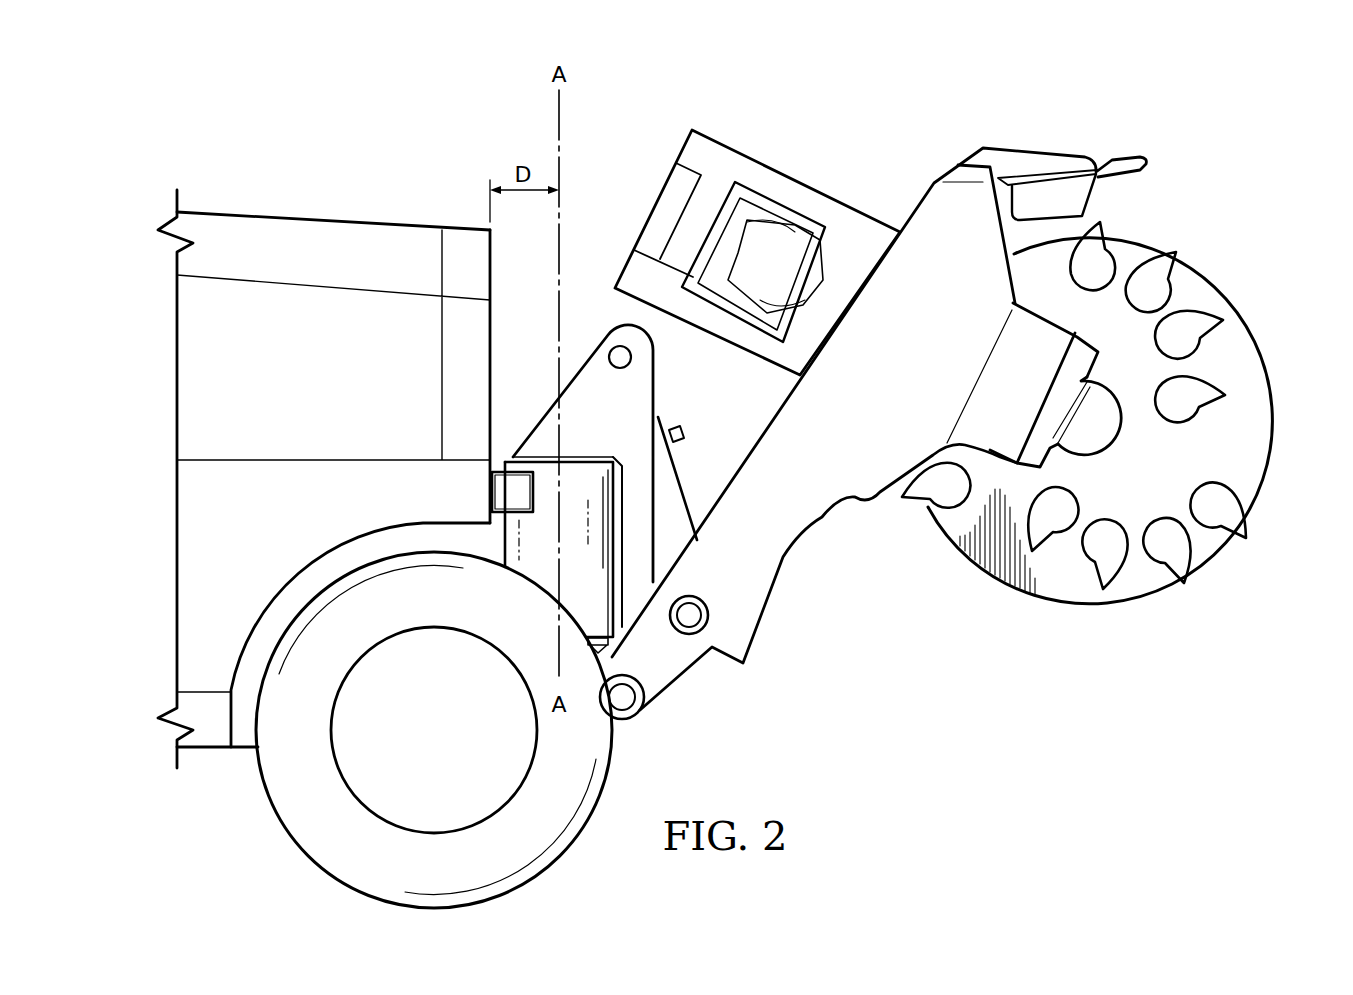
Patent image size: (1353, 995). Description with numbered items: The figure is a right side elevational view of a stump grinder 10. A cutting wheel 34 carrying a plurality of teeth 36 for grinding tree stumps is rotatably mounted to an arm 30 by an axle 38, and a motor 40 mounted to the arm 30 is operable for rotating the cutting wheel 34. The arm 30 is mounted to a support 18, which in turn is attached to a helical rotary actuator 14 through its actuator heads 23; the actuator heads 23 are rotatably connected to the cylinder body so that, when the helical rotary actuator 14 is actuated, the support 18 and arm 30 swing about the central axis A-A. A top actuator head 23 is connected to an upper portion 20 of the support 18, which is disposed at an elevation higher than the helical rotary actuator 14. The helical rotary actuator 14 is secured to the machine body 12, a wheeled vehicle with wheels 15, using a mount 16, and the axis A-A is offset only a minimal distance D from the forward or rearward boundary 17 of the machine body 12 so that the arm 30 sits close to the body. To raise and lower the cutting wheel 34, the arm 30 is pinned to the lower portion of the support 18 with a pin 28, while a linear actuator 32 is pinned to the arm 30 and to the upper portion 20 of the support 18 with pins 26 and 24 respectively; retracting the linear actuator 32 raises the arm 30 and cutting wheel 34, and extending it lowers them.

The stump grinder 10 is at (945, 71).
The machine body 12 is at (327, 220).
The helical rotary actuator 14 is at (587, 472).
The wheels 15 is at (272, 800).
The mount 16 is at (497, 498).
The forward or rearward boundary 17 is at (492, 265).
The support 18 is at (540, 385).
The upper portion 20 is at (655, 395).
The actuator heads 23 is at (537, 453).
The pin 24 is at (613, 343).
The pin 26 is at (695, 598).
The pin 28 is at (645, 707).
The arm 30 is at (825, 520).
The linear actuator 32 is at (682, 470).
The cutting wheel 34 is at (1254, 343).
The teeth 36 is at (1213, 407).
The axle 38 is at (1120, 435).
The motor 40 is at (790, 173).